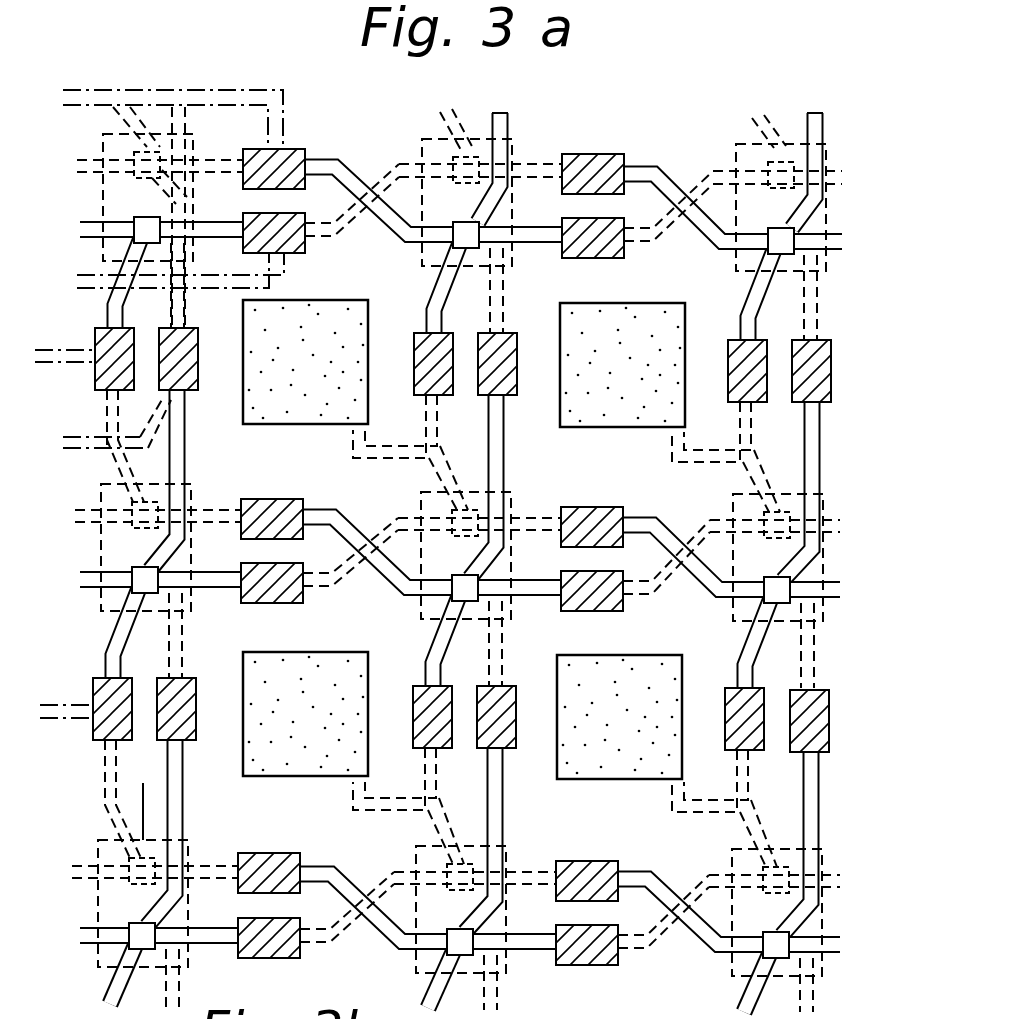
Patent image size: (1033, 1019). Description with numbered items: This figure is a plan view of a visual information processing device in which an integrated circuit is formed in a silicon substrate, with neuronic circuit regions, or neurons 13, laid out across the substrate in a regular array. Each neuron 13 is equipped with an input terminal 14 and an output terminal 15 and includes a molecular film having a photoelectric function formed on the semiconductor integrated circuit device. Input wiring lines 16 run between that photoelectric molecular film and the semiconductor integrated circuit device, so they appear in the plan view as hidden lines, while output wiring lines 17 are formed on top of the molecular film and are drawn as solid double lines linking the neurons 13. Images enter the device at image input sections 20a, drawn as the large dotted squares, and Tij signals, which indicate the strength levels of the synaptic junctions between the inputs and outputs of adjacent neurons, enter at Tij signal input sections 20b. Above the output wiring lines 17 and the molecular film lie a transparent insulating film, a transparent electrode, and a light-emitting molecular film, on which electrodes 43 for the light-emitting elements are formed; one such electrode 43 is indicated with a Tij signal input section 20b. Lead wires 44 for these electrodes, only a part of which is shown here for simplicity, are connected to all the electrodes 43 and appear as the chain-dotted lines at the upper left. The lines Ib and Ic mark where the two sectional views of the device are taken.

The neuron 13 is at (510, 148).
The input terminal 14 is at (480, 156).
The output terminal 15 is at (456, 221).
The input wiring line 16 is at (394, 171).
The output wiring line 17 is at (663, 172).
The image input section 20a is at (655, 303).
The Tij signal input section 20b is at (624, 136).
The electrode for light-emitting element 43 is at (597, 154).
The lead wire 44 is at (297, 100).
The section line Ib— Ib is at (88, 636).
The section line Ic— Ic is at (127, 888).